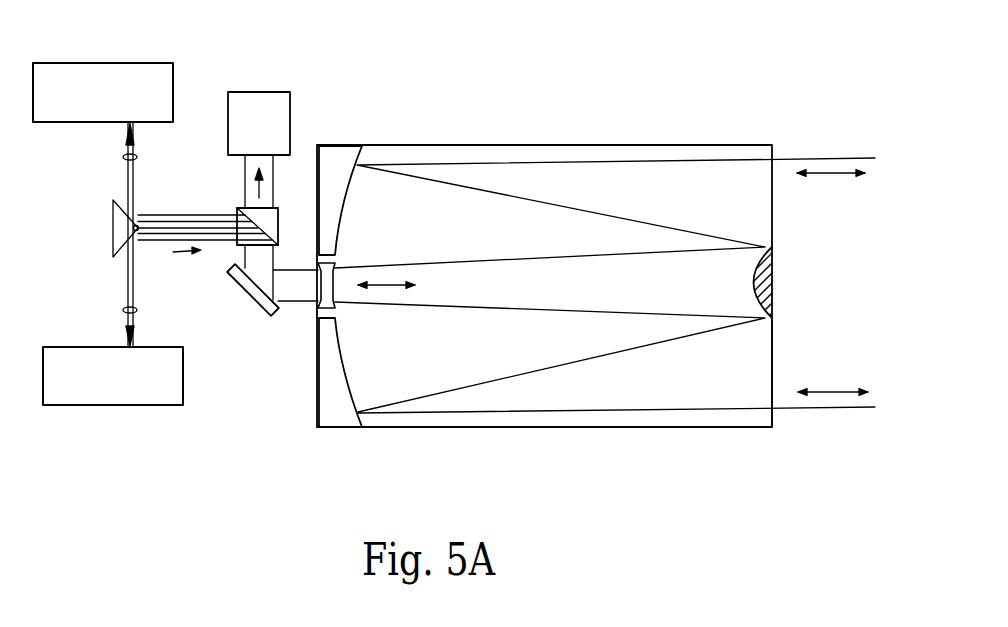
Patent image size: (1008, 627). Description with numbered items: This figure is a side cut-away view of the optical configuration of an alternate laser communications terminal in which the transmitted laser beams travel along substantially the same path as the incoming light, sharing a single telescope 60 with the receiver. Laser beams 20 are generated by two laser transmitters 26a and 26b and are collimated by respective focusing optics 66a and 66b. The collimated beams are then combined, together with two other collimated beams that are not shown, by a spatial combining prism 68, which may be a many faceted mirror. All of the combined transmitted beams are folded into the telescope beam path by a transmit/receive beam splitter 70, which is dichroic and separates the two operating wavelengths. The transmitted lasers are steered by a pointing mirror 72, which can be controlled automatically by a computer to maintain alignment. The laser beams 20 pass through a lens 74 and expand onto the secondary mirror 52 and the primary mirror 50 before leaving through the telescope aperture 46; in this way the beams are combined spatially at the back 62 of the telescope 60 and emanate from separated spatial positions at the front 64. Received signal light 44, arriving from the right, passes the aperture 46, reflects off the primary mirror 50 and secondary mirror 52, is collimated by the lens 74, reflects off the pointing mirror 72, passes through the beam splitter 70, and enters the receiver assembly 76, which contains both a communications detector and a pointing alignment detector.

The laser transmitter 26a is at (98, 62).
The laser transmitter 26b is at (150, 406).
The focusing optics 66a is at (123, 157).
The focusing optics 66b is at (122, 310).
The spatial combining prism 68 is at (110, 225).
The received signal light 44 is at (253, 192).
The transmit/receive beam splitter 70 is at (283, 218).
The receiver assembly 76 is at (258, 92).
The pointing mirror 72 is at (253, 297).
The laser beams 20 is at (173, 252).
The lens 74 is at (337, 267).
The back of the telescope 62 is at (316, 365).
The primary mirror 50 is at (347, 377).
The telescope base 60 is at (432, 430).
The secondary mirror 52 is at (775, 283).
The telescope aperture 46 is at (775, 352).
The front of the telescope 64 is at (773, 415).